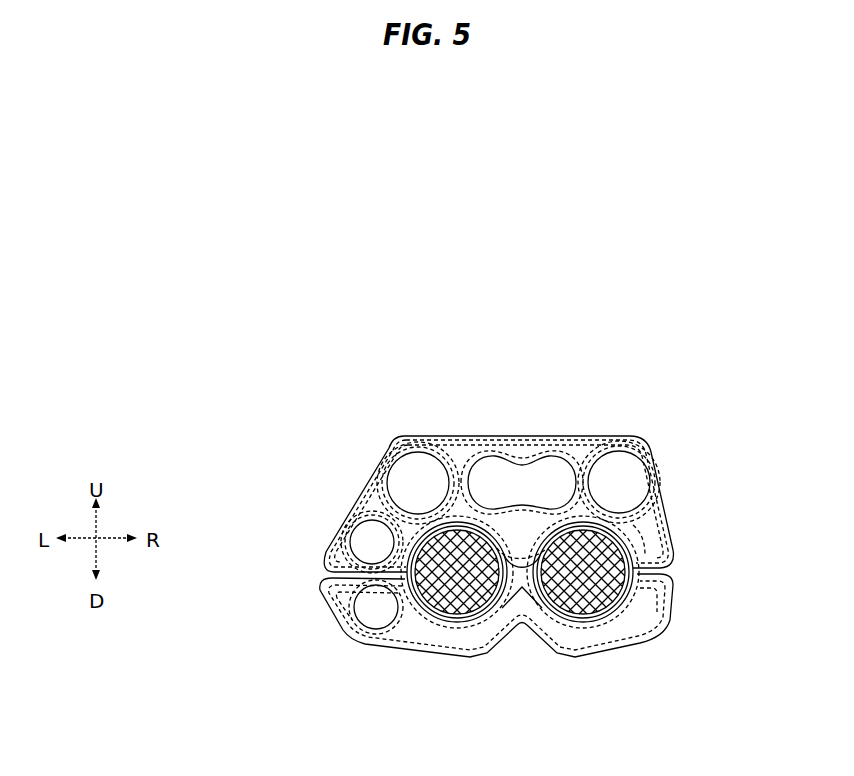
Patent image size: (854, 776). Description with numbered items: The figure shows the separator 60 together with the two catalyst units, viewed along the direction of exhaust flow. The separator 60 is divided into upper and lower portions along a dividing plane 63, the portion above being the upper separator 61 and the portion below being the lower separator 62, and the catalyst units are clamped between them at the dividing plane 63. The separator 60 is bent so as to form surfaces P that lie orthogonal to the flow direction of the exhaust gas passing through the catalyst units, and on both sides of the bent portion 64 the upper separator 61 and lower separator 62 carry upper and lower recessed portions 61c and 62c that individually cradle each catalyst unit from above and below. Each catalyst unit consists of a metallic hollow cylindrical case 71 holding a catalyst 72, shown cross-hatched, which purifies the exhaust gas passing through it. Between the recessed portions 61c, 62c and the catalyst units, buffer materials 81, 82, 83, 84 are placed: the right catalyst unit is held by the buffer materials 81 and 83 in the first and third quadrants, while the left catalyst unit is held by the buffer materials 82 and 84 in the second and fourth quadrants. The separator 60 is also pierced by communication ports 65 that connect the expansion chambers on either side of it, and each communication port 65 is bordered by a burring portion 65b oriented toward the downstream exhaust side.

The separator 60 is at (331, 535).
The upper separator 61 is at (363, 450).
The upper recessed portion 61c is at (455, 455).
The lower separator 62 is at (330, 610).
The lower recessed portion 62c is at (440, 620).
The dividing plane 63 is at (319, 576).
The bent portion 64 is at (517, 452).
The communication port 65 is at (418, 470).
The burring portion 65b is at (390, 455).
The hollow cylindrical case 71 is at (385, 640).
The catalyst 72 is at (360, 625).
The buffer material 81 is at (633, 538).
The buffer material 82 is at (410, 540).
The buffer material 83 is at (580, 625).
The buffer material 84 is at (490, 650).
The surface P is at (450, 595).